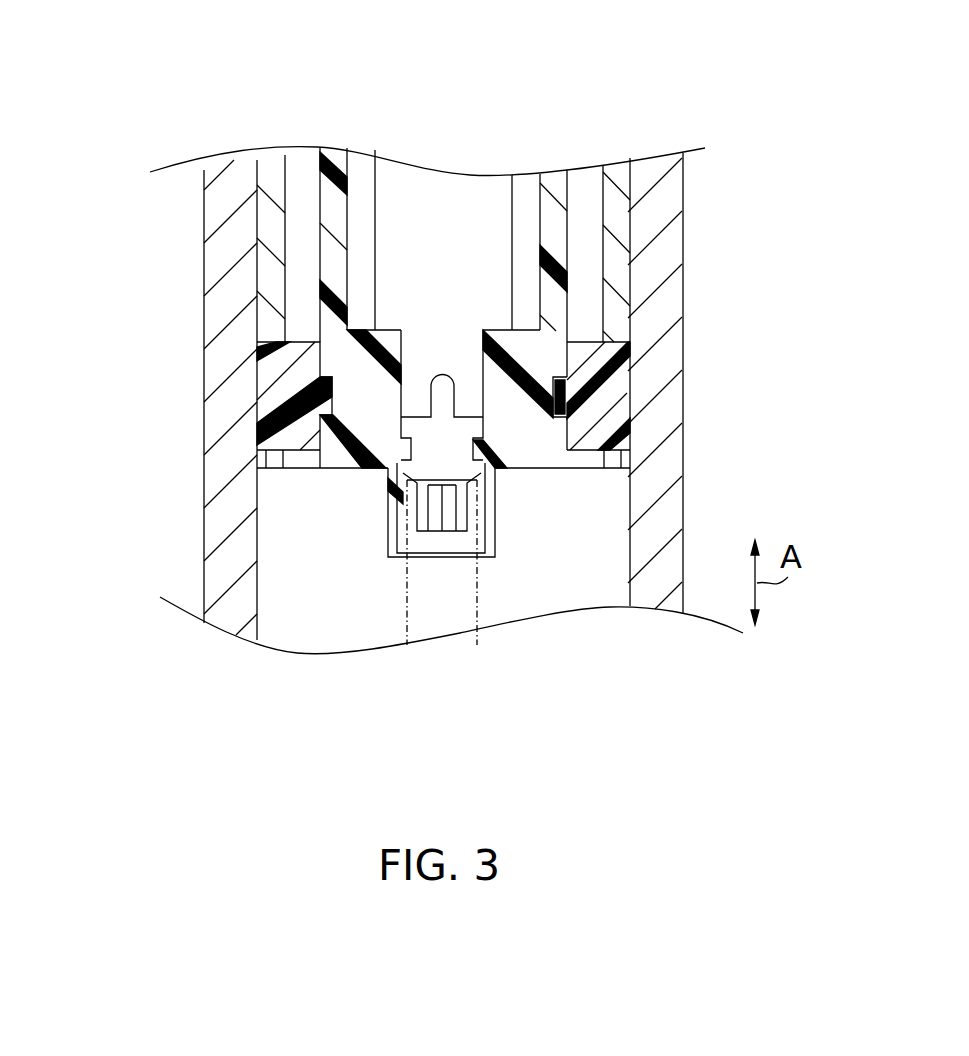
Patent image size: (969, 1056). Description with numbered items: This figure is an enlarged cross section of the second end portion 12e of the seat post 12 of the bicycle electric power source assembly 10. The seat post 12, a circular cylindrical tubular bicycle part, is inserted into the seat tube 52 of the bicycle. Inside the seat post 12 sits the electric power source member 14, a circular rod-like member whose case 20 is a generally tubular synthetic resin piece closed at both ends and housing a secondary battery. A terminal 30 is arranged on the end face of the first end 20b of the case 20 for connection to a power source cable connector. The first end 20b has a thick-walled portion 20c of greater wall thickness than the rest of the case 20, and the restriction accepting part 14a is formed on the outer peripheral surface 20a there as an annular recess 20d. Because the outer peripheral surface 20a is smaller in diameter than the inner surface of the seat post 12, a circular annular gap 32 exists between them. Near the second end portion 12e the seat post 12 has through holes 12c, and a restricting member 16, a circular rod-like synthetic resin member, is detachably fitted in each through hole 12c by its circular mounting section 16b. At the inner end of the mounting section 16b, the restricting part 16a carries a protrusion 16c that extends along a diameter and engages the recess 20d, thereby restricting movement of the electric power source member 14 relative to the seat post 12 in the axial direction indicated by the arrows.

The bicycle electric power source assembly 10 is at (478, 133).
The seat post 12 is at (646, 215).
The through hole 12c is at (257, 447).
The second end portion 12e is at (273, 470).
The electric power source member 14 is at (307, 163).
The restriction accepting part 14a is at (562, 397).
The restricting member 16 is at (240, 372).
The restricting part 16a is at (537, 404).
The mounting section 16b is at (264, 472).
The protrusion 16c is at (363, 470).
The case 20 is at (307, 240).
The outer peripheral surface 20a is at (588, 298).
The first end 20b is at (490, 397).
The thick-walled portion 20c is at (360, 330).
The recess 20d is at (257, 426).
The terminal 30 is at (438, 530).
The gap 32 is at (302, 297).
The seat tube 52 is at (682, 518).